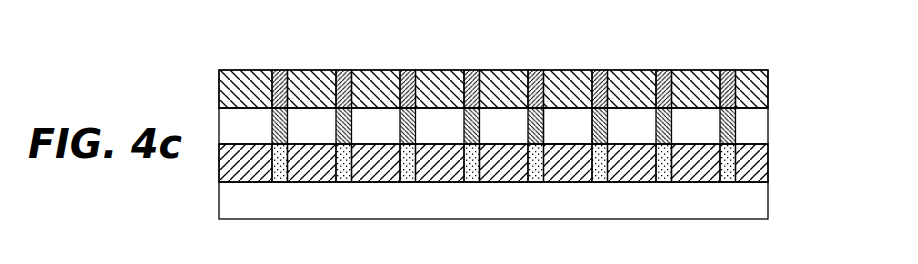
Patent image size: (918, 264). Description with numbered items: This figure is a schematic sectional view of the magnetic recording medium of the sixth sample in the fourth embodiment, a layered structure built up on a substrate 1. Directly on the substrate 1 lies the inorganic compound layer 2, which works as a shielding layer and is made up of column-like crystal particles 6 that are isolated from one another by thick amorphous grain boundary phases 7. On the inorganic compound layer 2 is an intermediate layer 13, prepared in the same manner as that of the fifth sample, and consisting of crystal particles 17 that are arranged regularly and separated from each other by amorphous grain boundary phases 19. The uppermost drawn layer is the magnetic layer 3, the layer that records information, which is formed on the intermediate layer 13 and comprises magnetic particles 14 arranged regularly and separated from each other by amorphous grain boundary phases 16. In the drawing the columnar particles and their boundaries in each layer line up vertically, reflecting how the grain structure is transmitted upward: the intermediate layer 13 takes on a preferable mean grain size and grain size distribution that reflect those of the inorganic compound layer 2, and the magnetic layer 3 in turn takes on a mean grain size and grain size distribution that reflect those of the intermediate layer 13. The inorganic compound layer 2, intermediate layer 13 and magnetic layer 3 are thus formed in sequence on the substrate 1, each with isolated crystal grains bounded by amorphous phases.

The substrate 1 is at (763, 200).
The inorganic compound layer 2 is at (763, 163).
The magnetic layer 3 is at (763, 90).
The column-like crystal particles 6 is at (378, 182).
The amorphous grain boundary phases 7 is at (342, 182).
The intermediate layer 13 is at (763, 128).
The magnetic particles 14 is at (704, 72).
The amorphous grain boundary phases 16 is at (661, 72).
The crystal particles 17 is at (567, 120).
The amorphous grain boundary phases 19 is at (527, 130).